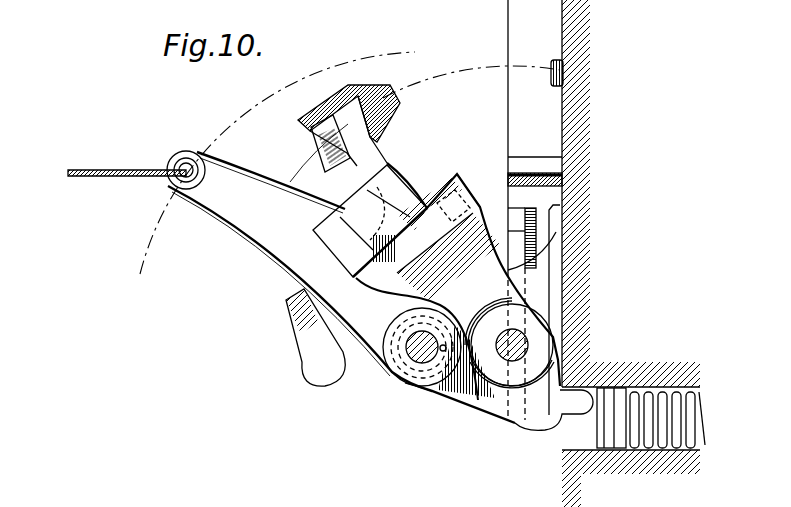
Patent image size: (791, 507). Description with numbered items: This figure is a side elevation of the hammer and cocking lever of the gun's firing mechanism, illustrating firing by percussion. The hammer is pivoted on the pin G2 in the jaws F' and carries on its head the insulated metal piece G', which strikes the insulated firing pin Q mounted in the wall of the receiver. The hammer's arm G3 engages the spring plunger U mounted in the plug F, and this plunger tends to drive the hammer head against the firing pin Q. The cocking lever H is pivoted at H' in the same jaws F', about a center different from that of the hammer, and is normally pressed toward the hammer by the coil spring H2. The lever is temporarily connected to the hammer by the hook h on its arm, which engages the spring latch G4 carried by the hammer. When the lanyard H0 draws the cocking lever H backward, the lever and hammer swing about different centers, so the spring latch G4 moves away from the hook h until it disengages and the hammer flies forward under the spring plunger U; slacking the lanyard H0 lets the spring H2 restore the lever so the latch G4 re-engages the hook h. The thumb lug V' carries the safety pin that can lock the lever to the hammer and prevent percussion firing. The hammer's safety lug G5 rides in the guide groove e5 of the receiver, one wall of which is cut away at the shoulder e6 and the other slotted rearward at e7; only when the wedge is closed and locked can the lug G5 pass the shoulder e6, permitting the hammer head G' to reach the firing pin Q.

The plug F is at (604, 253).
The jaws F' is at (463, 385).
The groove e5 is at (543, 250).
The cut-away shoulder e6 is at (555, 208).
The rearward slot e7 is at (512, 189).
The insulated firing pin Q is at (556, 62).
The spring plunger U is at (608, 440).
The cocking lever H is at (341, 287).
The lanyard H0 is at (127, 158).
The pivot H' is at (401, 362).
The coil spring H2 is at (410, 377).
The thumb lug V' is at (297, 337).
The insulated metal piece G' is at (429, 242).
The hook h is at (405, 186).
The safety lug G5 is at (459, 174).
The spring latch plunger G4 is at (435, 246).
The pivot pin G2 is at (510, 357).
The hammer arm G3 is at (560, 428).